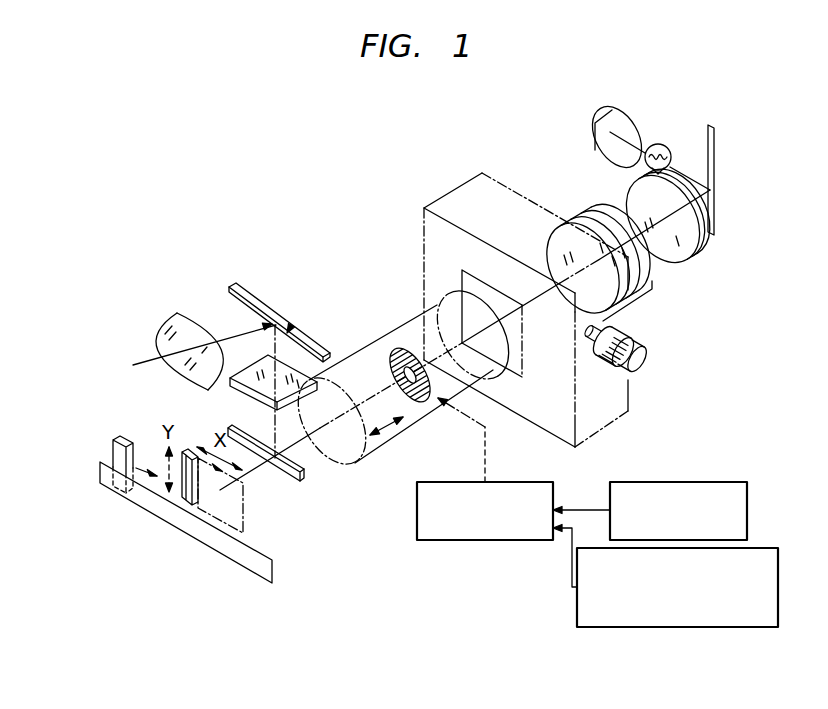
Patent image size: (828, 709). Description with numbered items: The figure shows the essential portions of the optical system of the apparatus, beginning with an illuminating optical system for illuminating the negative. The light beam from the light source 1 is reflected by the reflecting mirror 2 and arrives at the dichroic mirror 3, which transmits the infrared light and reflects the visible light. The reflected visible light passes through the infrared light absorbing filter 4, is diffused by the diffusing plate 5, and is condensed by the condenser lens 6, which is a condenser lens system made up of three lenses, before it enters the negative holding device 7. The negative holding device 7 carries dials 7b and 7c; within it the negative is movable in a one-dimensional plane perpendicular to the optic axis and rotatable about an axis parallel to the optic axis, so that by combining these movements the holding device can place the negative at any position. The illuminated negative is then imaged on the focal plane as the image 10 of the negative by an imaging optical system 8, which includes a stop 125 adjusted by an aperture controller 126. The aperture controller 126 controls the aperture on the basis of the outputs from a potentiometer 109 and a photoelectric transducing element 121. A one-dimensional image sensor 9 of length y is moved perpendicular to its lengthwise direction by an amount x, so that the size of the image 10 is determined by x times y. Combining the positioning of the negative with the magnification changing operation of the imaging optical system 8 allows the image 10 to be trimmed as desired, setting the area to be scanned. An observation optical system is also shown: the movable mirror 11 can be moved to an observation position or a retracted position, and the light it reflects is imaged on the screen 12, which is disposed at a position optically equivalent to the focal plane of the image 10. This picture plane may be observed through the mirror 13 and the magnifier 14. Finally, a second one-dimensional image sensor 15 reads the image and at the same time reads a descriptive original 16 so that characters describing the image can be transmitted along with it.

The light source 1 is at (665, 145).
The reflecting mirror 2 is at (632, 113).
The dichroic mirror 3 is at (715, 150).
The infrared light absorbing filter 4 is at (701, 248).
The diffusing plate 5 is at (685, 259).
The condenser lens 6 is at (631, 302).
The negative holding device 7 is at (593, 436).
The dial 7b is at (648, 355).
The dial 7c is at (614, 368).
The imaging optical system 8 is at (395, 437).
The one-dimensional image sensor 9 is at (184, 451).
The image of the negative 10 is at (245, 509).
The movable mirror 11 is at (304, 474).
The screen 12 is at (316, 381).
The mirror 13 is at (262, 300).
The magnifier 14 is at (177, 311).
The second one-dimensional image sensor 15 is at (113, 440).
The descriptive original 16 is at (253, 573).
The potentiometer 109 is at (710, 482).
The photoelectric transducing element 121 is at (718, 630).
The stop 125 is at (398, 346).
The aperture controller 126 is at (524, 482).